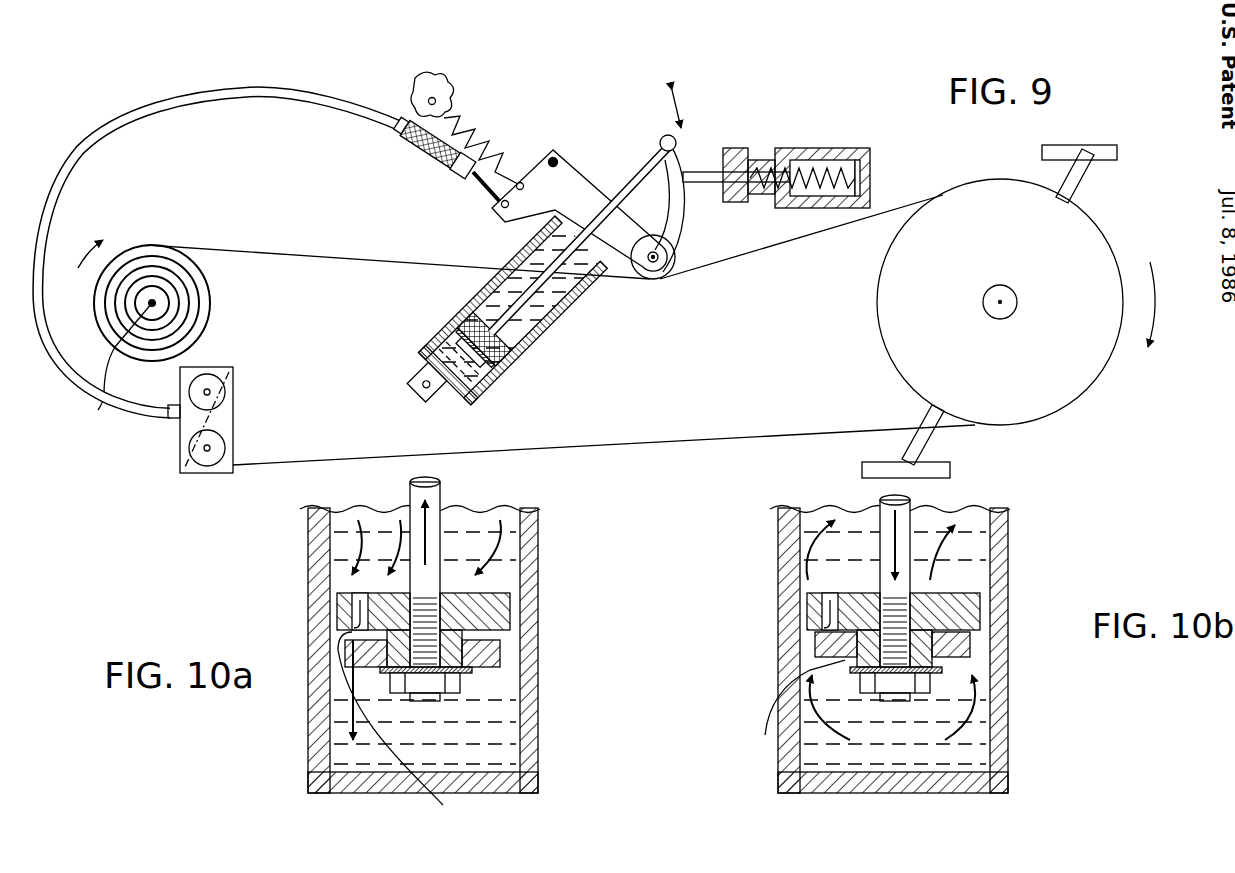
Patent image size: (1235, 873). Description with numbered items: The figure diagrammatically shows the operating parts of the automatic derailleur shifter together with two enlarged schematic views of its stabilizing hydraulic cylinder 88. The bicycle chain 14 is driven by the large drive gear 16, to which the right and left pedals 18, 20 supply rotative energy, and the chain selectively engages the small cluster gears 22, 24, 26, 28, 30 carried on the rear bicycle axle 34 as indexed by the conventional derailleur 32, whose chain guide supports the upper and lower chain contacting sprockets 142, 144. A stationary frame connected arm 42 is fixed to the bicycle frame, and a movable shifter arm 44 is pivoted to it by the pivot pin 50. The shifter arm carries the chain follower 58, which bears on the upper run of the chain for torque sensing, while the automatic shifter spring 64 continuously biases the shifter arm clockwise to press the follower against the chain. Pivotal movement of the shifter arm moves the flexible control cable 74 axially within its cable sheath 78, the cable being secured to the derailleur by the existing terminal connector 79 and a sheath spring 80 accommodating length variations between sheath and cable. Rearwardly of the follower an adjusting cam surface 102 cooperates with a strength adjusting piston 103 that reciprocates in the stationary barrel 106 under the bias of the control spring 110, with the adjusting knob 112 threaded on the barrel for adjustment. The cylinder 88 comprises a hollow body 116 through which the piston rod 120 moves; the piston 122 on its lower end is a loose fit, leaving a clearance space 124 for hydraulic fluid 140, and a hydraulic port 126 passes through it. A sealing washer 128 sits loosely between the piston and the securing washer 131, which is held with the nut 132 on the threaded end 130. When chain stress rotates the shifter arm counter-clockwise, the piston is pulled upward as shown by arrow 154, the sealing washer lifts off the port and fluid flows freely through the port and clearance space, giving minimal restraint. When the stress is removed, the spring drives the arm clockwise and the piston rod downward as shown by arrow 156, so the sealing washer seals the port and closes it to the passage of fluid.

In FIG. 9, the bicycle chain 14 is at (735, 440).
In FIG. 9, the large drive gear 16 is at (1095, 366).
In FIG. 9, the right pedal 18 is at (1118, 152).
In FIG. 9, the left pedal 20 is at (950, 470).
In FIG. 9, the small cluster gear 22 is at (169, 300).
In FIG. 9, the small cluster gear 24 is at (179, 304).
In FIG. 9, the small cluster gear 26 is at (189, 318).
In FIG. 9, the small cluster gear 28 is at (199, 332).
In FIG. 9, the small cluster gear 30 is at (203, 350).
In FIG. 9, the derailleur 32 is at (238, 436).
In FIG. 9, the rear bicycle axle 34 is at (110, 392).
In FIG. 9, the frame connected arm 42 is at (445, 82).
In FIG. 9, the movable shifter arm 44 is at (578, 180).
In FIG. 9, the pivot pin 50 is at (553, 157).
In FIG. 9, the chain follower 58 is at (665, 280).
In FIG. 9, the automatic shifter spring 64 is at (500, 140).
In FIG. 9, the flexible control cable 74 is at (478, 188).
In FIG. 9, the cable sheath 78 is at (205, 95).
In FIG. 9, the terminal connector 79 is at (172, 420).
In FIG. 9, the sheath spring 80 is at (420, 148).
In FIG. 9, the cylinder 88 is at (560, 325).
In FIG. 10a, the cylinder 88 is at (542, 600).
In FIG. 10b, the cylinder 88 is at (1012, 590).
In FIG. 9, the cam surface 102 is at (690, 200).
In FIG. 9, the strength adjusting piston 103 is at (690, 178).
In FIG. 9, the stationary barrel 106 is at (740, 148).
In FIG. 9, the control spring 110 is at (872, 178).
In FIG. 9, the adjusting knob 112 is at (835, 148).
In FIG. 10a, the hollow body 116 is at (530, 560).
In FIG. 10b, the hollow body 116 is at (1000, 560).
In FIG. 9, the piston rod 120 is at (614, 180).
In FIG. 10a, the piston rod 120 is at (445, 525).
In FIG. 10b, the piston rod 120 is at (905, 525).
In FIG. 9, the piston 122 is at (505, 350).
In FIG. 10a, the piston 122 is at (495, 600).
In FIG. 10b, the piston 122 is at (965, 600).
In FIG. 10a, the clearance space 124 is at (517, 625).
In FIG. 10b, the clearance space 124 is at (983, 632).
In FIG. 10a, the hydraulic port 126 is at (360, 612).
In FIG. 10b, the hydraulic port 126 is at (830, 612).
In FIG. 9, the sealing washer 128 is at (485, 362).
In FIG. 10a, the sealing washer 128 is at (505, 668).
In FIG. 10b, the sealing washer 128 is at (975, 652).
In FIG. 9, the threaded end 130 is at (440, 350).
In FIG. 10a, the threaded end 130 is at (440, 700).
In FIG. 10b, the threaded end 130 is at (900, 705).
In FIG. 10a, the securing washer 131 is at (402, 731).
In FIG. 10b, the securing washer 131 is at (781, 705).
In FIG. 9, the nut 132 is at (470, 378).
In FIG. 10a, the nut 132 is at (460, 682).
In FIG. 10b, the nut 132 is at (930, 682).
In FIG. 9, the hydraulic fluid 140 is at (560, 280).
In FIG. 10a, the hydraulic fluid 140 is at (340, 542).
In FIG. 10b, the hydraulic fluid 140 is at (810, 542).
In FIG. 9, the upper chain contacting sprocket 142 is at (216, 396).
In FIG. 9, the lower chain contacting sprocket 144 is at (206, 460).
In FIG. 10a, the arrow 154 is at (400, 510).
In FIG. 10b, the arrow 156 is at (870, 535).